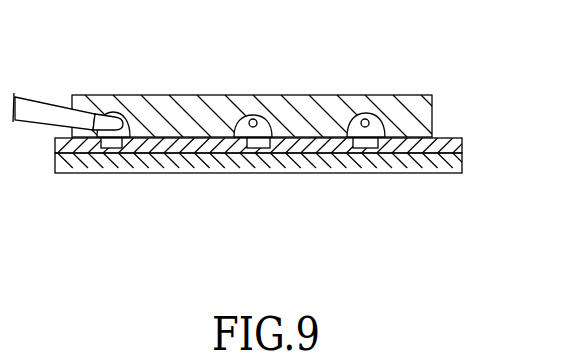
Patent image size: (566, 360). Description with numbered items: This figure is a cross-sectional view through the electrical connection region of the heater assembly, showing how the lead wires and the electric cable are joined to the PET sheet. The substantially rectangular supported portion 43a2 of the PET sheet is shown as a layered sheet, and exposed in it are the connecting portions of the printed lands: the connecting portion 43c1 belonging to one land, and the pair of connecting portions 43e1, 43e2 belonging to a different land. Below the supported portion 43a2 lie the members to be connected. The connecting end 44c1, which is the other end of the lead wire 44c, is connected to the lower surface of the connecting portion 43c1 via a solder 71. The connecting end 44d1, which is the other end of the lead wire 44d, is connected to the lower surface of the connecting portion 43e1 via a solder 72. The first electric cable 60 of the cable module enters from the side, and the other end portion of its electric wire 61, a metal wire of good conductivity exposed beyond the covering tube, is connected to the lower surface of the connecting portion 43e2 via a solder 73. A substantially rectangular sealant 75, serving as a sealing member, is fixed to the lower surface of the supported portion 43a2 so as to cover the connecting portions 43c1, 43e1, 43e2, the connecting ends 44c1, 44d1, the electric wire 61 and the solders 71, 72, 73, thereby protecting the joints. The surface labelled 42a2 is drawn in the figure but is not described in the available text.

The first electric cable 60 is at (40, 101).
The electric wire 61 is at (97, 116).
The solder 73 is at (123, 112).
The lead wire 44d is at (235, 84).
The connecting end 44d1 is at (251, 114).
The solder 72 is at (263, 114).
The lead wire 44c is at (350, 74).
The connecting end 44c1 is at (358, 112).
The solder 71 is at (368, 116).
The sealant 75 is at (431, 101).
The supported portion 43a2 is at (463, 146).
The connecting portion 43e2 is at (114, 148).
The connecting portion 43e1 is at (257, 148).
The connecting portion 43c1 is at (362, 148).
The first layer surface 42a2 is at (449, 174).